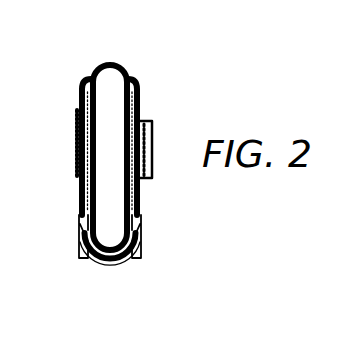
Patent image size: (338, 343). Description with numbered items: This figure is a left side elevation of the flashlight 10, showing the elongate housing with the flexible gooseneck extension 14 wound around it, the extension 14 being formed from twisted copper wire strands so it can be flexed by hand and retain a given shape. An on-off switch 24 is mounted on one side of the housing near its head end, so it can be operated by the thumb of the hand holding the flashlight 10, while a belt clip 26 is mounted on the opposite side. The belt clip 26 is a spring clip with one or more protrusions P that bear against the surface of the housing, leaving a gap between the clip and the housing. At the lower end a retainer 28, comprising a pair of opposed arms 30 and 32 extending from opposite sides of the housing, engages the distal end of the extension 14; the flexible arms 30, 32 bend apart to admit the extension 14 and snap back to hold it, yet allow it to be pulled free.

The flashlight 10 is at (83, 81).
The extension 14 is at (112, 63).
The on-off switch 24 is at (76, 150).
The belt clip 26 is at (157, 153).
The retainer 28 is at (137, 261).
The arm 30 is at (79, 240).
The arm 32 is at (139, 236).
The protrusions P is at (143, 121).